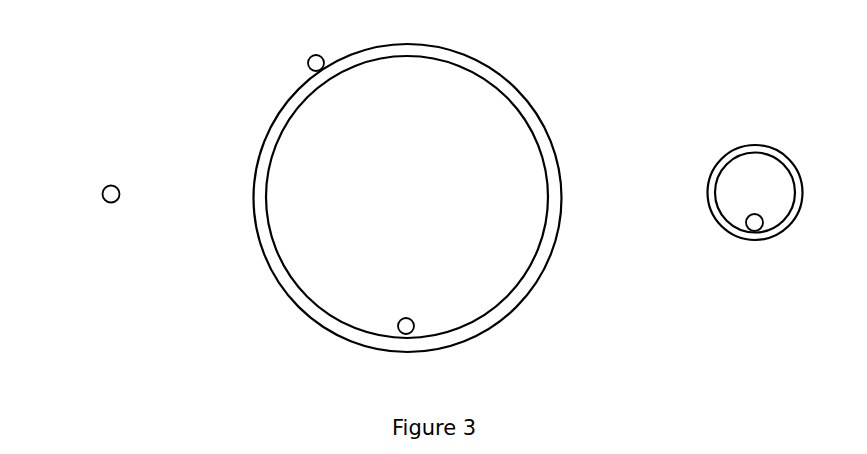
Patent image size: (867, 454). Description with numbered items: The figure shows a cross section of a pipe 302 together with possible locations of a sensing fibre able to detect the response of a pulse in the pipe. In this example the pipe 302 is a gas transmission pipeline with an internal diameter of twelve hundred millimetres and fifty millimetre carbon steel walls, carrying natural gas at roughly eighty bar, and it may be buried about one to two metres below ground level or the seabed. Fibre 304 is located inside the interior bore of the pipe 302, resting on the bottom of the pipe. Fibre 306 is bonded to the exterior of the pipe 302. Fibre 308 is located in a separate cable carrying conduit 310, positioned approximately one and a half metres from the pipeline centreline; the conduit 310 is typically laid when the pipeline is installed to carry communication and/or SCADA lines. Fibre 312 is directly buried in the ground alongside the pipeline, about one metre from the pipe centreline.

The pipe 302 is at (273, 275).
The fibre 304 is at (414, 328).
The fibre 306 is at (308, 58).
The fibre 308 is at (754, 231).
The cable carrying conduit 310 is at (738, 148).
The fibre 312 is at (102, 201).